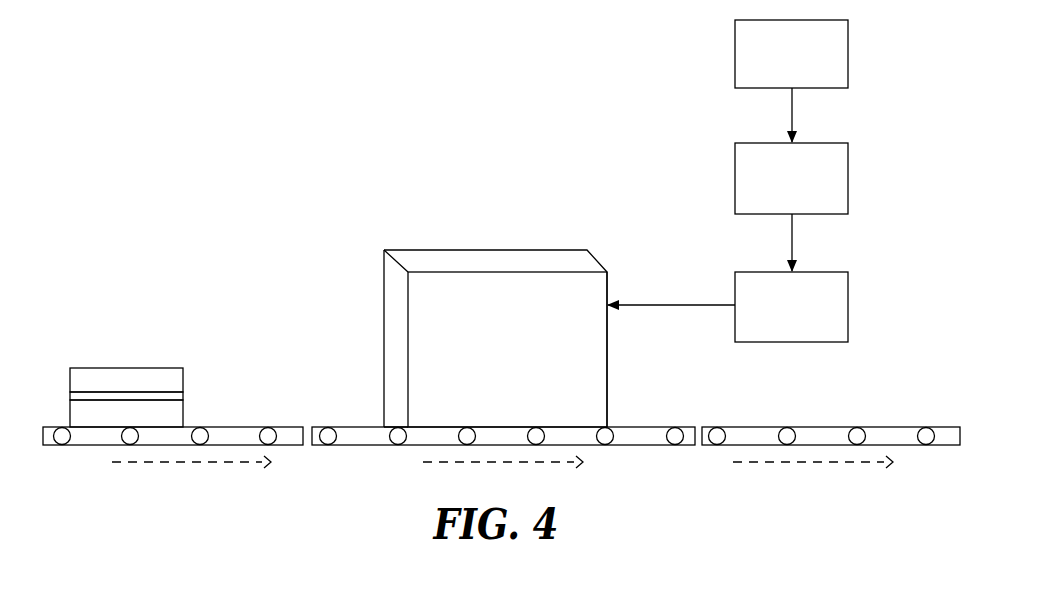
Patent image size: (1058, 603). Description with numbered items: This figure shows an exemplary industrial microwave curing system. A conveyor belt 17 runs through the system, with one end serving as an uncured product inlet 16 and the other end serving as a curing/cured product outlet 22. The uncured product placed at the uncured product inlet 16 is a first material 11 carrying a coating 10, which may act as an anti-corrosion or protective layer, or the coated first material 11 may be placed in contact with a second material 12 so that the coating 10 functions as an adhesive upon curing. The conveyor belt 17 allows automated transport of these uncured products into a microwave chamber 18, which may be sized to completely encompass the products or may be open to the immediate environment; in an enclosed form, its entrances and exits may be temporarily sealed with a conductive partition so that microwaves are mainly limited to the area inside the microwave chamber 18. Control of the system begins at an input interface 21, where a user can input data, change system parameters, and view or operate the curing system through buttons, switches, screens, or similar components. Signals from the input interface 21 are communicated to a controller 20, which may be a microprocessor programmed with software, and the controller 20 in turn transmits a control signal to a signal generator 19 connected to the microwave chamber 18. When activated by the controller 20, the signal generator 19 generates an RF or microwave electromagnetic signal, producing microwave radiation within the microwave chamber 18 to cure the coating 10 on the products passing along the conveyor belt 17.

The coating 10 is at (168, 397).
The first material 11 is at (93, 417).
The second material 12 is at (165, 375).
The uncured product inlet 16 is at (395, 373).
The conveyor belt 17 is at (245, 427).
The microwave chamber 18 is at (500, 308).
The signal generator 19 is at (848, 305).
The controller 20 is at (848, 180).
The input interface 21 is at (848, 55).
The curing/cured product outlet 22 is at (607, 378).